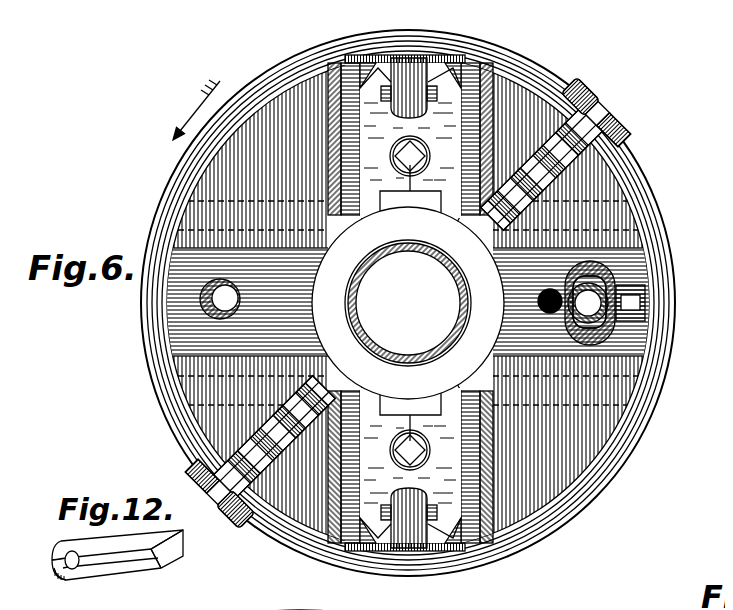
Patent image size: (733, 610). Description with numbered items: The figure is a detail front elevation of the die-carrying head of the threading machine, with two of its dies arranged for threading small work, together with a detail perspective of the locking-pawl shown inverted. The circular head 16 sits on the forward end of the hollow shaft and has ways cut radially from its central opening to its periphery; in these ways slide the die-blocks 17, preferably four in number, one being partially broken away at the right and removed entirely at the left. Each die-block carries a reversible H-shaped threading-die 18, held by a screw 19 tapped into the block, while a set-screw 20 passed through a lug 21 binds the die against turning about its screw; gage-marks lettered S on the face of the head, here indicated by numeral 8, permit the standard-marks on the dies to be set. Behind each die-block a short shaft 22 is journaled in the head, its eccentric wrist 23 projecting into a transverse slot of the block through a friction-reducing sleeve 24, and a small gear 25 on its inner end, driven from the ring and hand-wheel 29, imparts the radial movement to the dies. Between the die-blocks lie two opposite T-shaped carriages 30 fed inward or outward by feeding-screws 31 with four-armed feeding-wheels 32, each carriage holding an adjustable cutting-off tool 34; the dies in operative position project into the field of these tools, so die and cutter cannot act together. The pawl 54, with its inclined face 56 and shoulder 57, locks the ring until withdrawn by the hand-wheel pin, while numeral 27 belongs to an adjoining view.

In FIG. 6, the circular head 16 is at (208, 194).
In FIG. 6, the die-block 17 is at (322, 62).
In FIG. 6, the threading-die 18 is at (390, 180).
In FIG. 6, the screw 19 is at (410, 303).
In FIG. 6, the set-screw 20 is at (415, 46).
In FIG. 6, the lug 21 is at (365, 48).
In FIG. 6, the short shaft 22 is at (196, 293).
In FIG. 6, the eccentric wrist 23 is at (612, 320).
In FIG. 6, the sleeve 24 is at (603, 273).
In FIG. 6, the small gear 25 is at (412, 605).
In FIG. 6, the element of adjacent figure 27 is at (235, 609).
In FIG. 6, the hand-wheel 29 is at (183, 142).
In FIG. 6, the T-shaped carriage 30 is at (282, 410).
In FIG. 6, the feeding-screw 31 is at (212, 494).
In FIG. 6, the four-armed feeding-wheel 32 is at (188, 472).
In FIG. 6, the adjustable tool 34 is at (250, 403).
In FIG. 6, the section line 8 is at (348, 148).
In FIG. 12, the pawl 54 is at (109, 560).
In FIG. 12, the inclined face 56 is at (166, 545).
In FIG. 12, the key bevel 57 is at (150, 552).